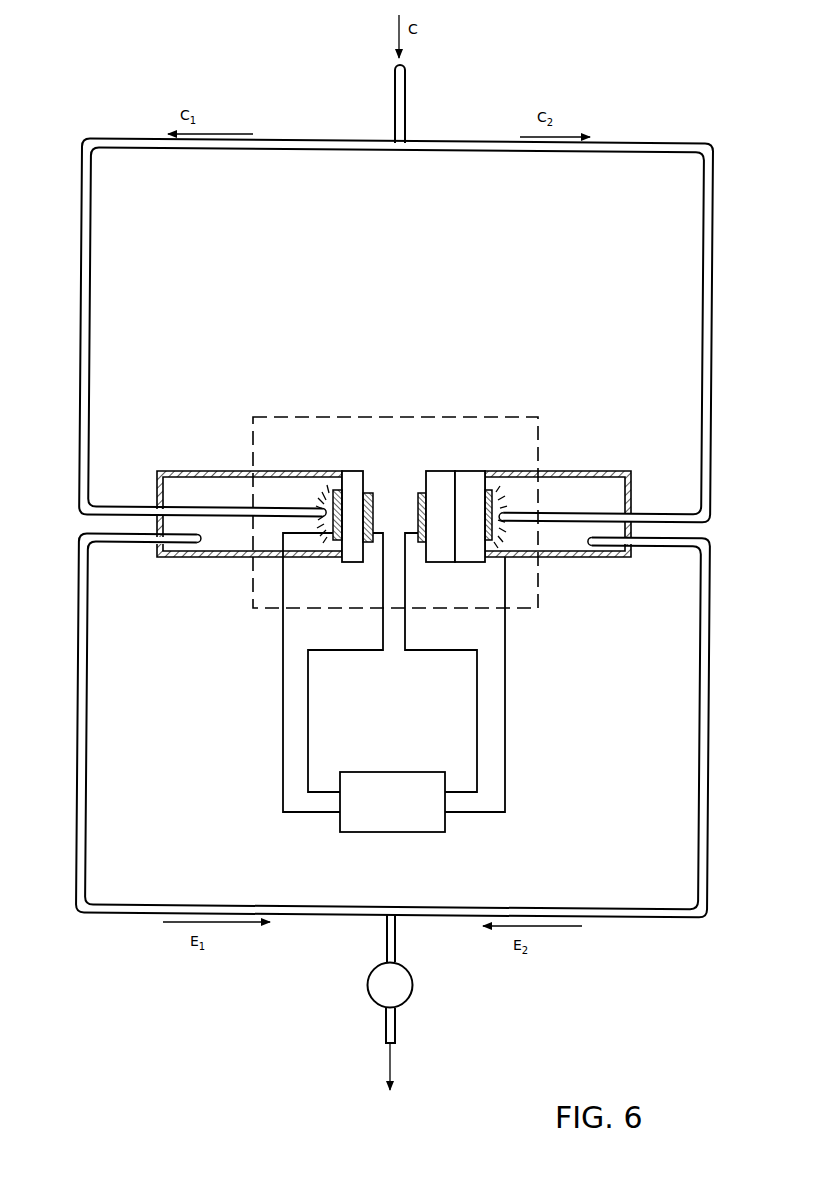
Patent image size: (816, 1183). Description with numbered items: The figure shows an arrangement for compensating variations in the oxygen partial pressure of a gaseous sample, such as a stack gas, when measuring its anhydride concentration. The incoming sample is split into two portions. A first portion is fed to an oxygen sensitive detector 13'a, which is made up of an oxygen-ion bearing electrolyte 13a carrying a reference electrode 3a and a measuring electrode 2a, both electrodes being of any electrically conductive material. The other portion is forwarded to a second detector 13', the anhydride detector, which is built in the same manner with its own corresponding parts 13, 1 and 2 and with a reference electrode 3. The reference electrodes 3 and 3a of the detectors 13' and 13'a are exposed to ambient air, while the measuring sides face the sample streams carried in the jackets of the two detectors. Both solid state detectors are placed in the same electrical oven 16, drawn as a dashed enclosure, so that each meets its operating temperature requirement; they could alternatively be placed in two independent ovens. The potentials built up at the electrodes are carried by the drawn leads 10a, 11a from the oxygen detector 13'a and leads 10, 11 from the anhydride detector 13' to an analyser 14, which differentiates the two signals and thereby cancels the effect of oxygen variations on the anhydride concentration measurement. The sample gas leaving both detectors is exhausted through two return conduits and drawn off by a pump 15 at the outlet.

The thermoelectric element / semiconductor body 1 is at (473, 479).
The electrode (contact layer) 2 is at (497, 488).
The measuring electrode 2a is at (330, 495).
The reference electrode 3 is at (423, 493).
The reference electrode 3a is at (369, 493).
The lead frame conductor 10 is at (505, 716).
The lead frame conductor 10a is at (308, 716).
The lead frame conductor 11 is at (477, 716).
The lead frame conductor 11a is at (283, 716).
The heat conducting block 13 is at (440, 499).
The oxygen-ion bearing electrolyte 13a is at (353, 480).
The second detector 13' is at (558, 502).
The oxygen sensitive detector 13'a is at (249, 502).
The analyser 14 is at (418, 821).
The pump 15 is at (400, 998).
The electrical oven 16 is at (447, 417).